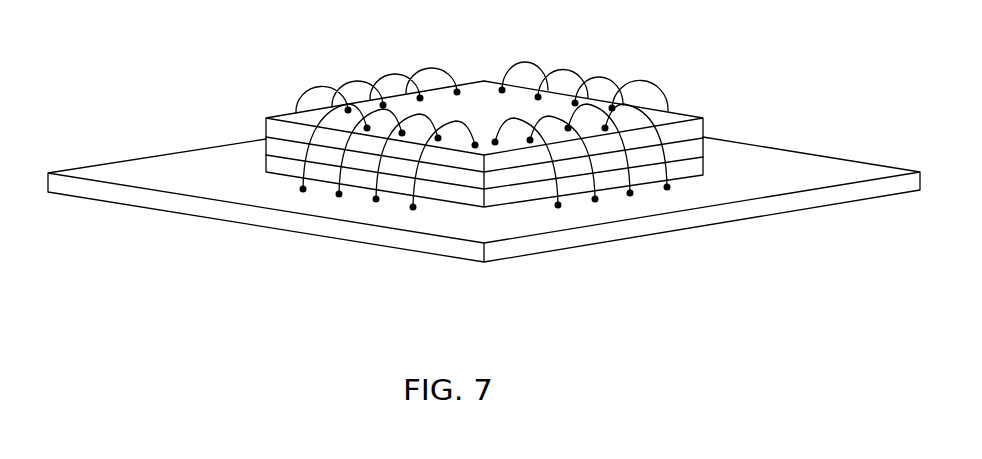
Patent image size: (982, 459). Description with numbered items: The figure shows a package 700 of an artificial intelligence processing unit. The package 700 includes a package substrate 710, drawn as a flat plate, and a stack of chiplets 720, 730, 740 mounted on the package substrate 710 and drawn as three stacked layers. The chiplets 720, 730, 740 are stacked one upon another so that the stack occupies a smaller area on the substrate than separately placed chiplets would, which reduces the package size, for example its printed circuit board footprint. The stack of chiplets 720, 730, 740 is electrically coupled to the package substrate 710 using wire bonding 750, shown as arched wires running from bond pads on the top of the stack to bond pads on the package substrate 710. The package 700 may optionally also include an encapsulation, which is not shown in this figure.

The package 700 is at (837, 35).
The package substrate 710 is at (157, 198).
The chiplet 720 is at (274, 167).
The chiplet 730 is at (272, 146).
The chiplet 740 is at (272, 126).
The wire bonding 750 is at (313, 84).